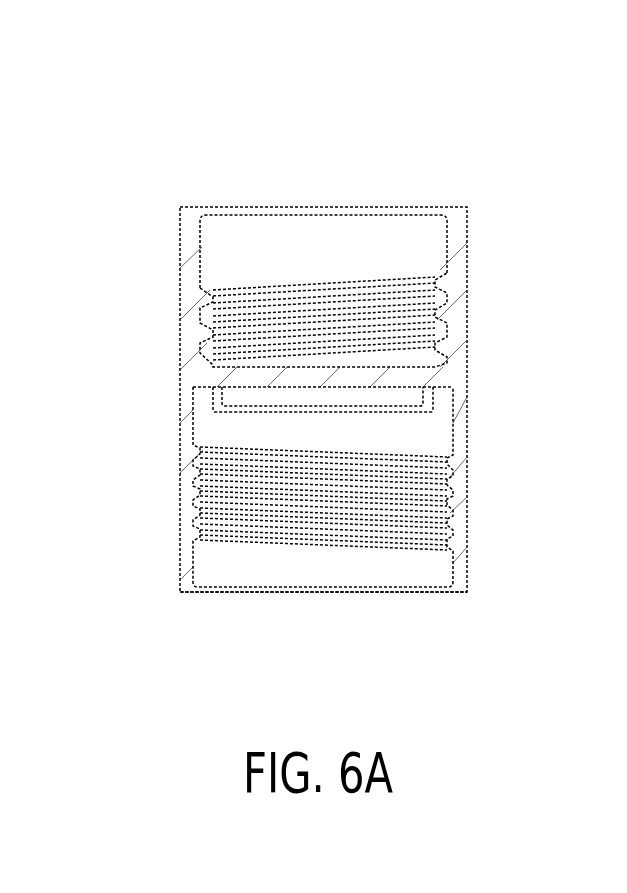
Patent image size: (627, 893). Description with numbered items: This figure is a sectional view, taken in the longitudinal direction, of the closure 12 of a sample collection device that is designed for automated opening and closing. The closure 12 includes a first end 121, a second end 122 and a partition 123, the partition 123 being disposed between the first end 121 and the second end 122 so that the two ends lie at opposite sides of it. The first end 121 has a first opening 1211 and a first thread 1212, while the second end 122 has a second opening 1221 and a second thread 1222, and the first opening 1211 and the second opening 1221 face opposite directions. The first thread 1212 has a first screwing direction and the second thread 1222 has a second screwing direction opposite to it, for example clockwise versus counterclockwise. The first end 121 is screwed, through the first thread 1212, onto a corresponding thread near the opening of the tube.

The closure 12 is at (549, 132).
The first end 121 is at (328, 522).
The first opening 1211 is at (342, 616).
The first thread 1212 is at (200, 522).
The second end 122 is at (314, 238).
The second opening 1221 is at (325, 180).
The second thread 1222 is at (210, 290).
The partition 123 is at (437, 382).